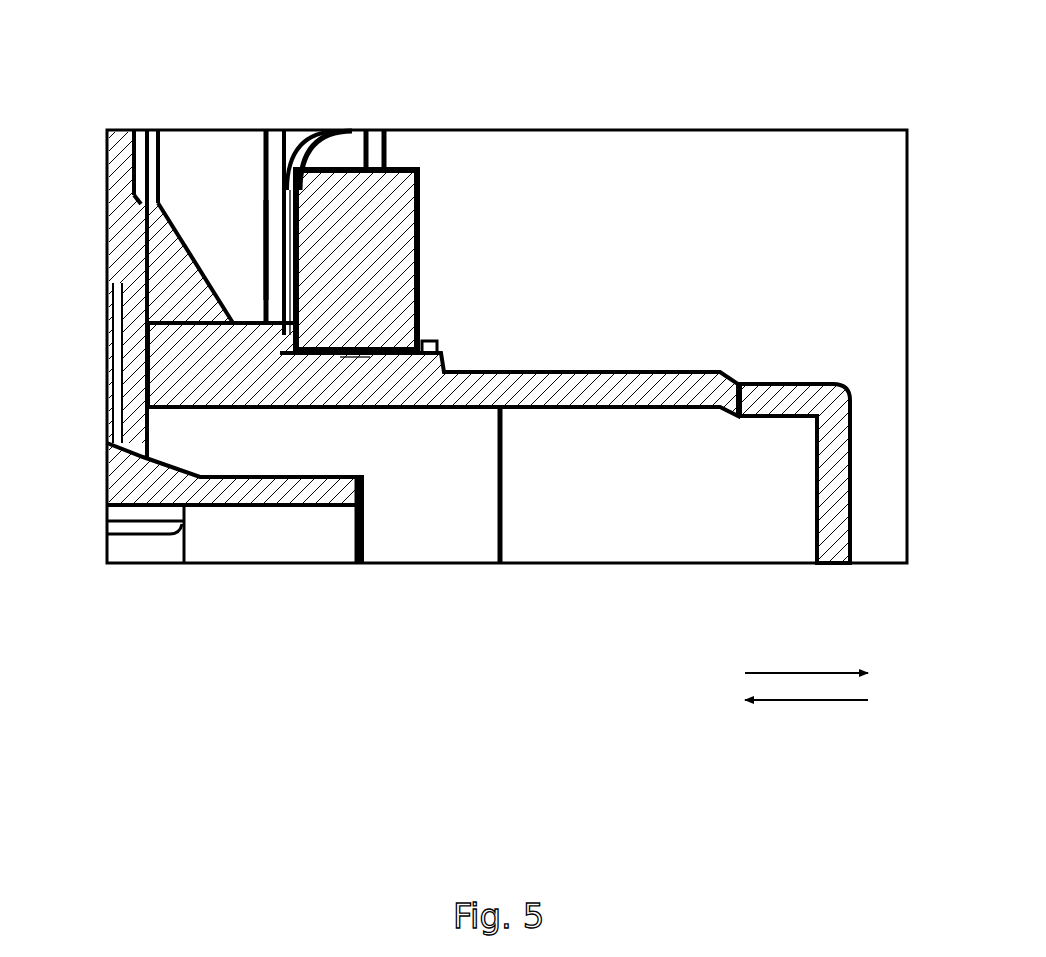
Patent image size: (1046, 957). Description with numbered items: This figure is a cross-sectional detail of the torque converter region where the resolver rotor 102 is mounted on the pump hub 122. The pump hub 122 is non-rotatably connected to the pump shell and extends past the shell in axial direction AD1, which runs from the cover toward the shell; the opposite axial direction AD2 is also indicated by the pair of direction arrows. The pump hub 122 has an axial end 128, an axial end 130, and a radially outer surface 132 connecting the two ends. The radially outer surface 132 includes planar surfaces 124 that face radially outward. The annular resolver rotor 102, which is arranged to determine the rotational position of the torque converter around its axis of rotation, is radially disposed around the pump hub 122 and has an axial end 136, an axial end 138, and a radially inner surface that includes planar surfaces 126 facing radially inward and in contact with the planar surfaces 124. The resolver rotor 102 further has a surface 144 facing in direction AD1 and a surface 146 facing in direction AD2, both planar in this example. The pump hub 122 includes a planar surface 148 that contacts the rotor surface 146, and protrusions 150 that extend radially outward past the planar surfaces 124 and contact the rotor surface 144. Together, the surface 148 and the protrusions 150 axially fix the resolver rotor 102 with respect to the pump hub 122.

The resolver rotor 102 is at (403, 153).
The pump hub 122 is at (581, 350).
The planar surfaces 124 is at (353, 357).
The planar surfaces 126 is at (370, 350).
The axial end 128 is at (143, 370).
The axial end 130 is at (852, 450).
The radially outer surface 132 is at (671, 368).
The axial end 136 is at (288, 277).
The axial end 138 is at (430, 188).
The surface 144 is at (422, 235).
The surface 146 is at (303, 260).
The surface 148 is at (293, 353).
The protrusions 150 is at (433, 346).
The axial direction AD1 is at (783, 672).
The axial direction AD2 is at (806, 701).